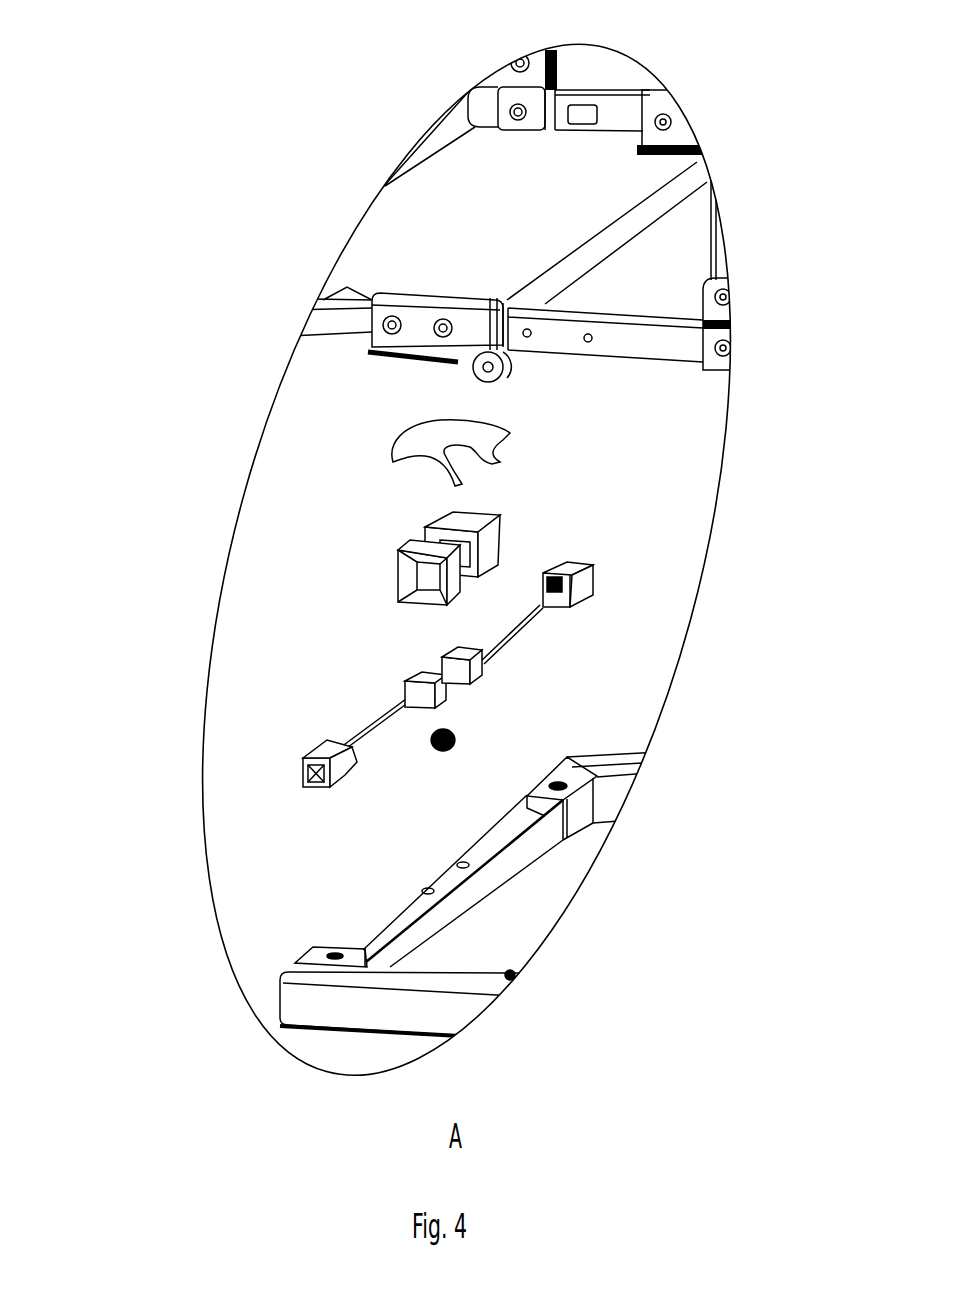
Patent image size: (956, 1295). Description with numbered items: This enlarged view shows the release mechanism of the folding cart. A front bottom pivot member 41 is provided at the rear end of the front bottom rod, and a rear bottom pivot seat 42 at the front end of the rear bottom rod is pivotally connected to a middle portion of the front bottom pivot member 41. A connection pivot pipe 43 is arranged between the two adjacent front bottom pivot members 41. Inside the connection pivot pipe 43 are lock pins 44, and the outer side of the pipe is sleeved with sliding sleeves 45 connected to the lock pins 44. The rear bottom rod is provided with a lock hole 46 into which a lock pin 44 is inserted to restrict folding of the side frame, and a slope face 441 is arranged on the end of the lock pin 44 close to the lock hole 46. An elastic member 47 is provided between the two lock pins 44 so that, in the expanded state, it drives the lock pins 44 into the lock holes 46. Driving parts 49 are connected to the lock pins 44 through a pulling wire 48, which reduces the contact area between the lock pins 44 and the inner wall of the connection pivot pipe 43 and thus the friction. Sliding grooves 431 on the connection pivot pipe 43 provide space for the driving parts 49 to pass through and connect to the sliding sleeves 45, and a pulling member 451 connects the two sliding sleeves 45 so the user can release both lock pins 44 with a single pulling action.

The front bottom pivot member 41 is at (484, 1017).
The rear bottom pivot seat 42 is at (484, 330).
The connection pivot pipe 43 is at (543, 859).
The sliding groove 431 is at (293, 884).
The lock pin 44 is at (455, 674).
The slope face 441 is at (201, 796).
The sliding sleeve 45 is at (315, 552).
The pulling member 451 is at (353, 447).
The lock hole 46 is at (582, 105).
The elastic member 47 is at (598, 762).
The pulling wire 48 is at (441, 679).
The driving part 49 is at (570, 695).